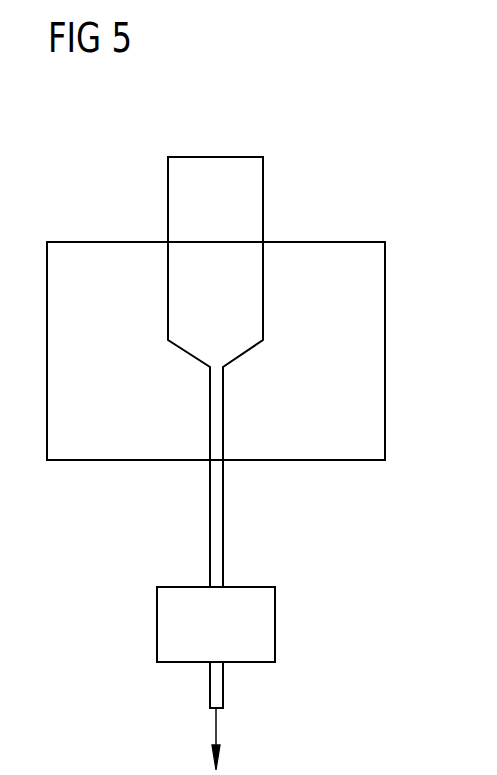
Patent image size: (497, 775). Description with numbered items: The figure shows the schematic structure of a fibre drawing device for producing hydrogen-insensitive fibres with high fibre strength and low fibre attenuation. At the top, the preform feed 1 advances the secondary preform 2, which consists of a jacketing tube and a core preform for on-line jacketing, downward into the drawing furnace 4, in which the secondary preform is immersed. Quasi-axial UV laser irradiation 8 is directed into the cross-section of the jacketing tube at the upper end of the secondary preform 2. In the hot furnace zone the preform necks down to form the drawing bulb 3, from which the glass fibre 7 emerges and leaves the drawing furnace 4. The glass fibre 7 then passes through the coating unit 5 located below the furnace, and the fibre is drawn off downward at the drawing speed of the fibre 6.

The preform feed 1 is at (220, 100).
The secondary preform 2 is at (264, 177).
The drawing bulb 3 is at (245, 357).
The drawing furnace 4 is at (294, 463).
The coating unit 5 is at (278, 626).
The drawing speed of the fibre 6 is at (213, 731).
The glass fibre 7 is at (207, 471).
The quasi-axial UV laser irradiation 8 is at (203, 156).